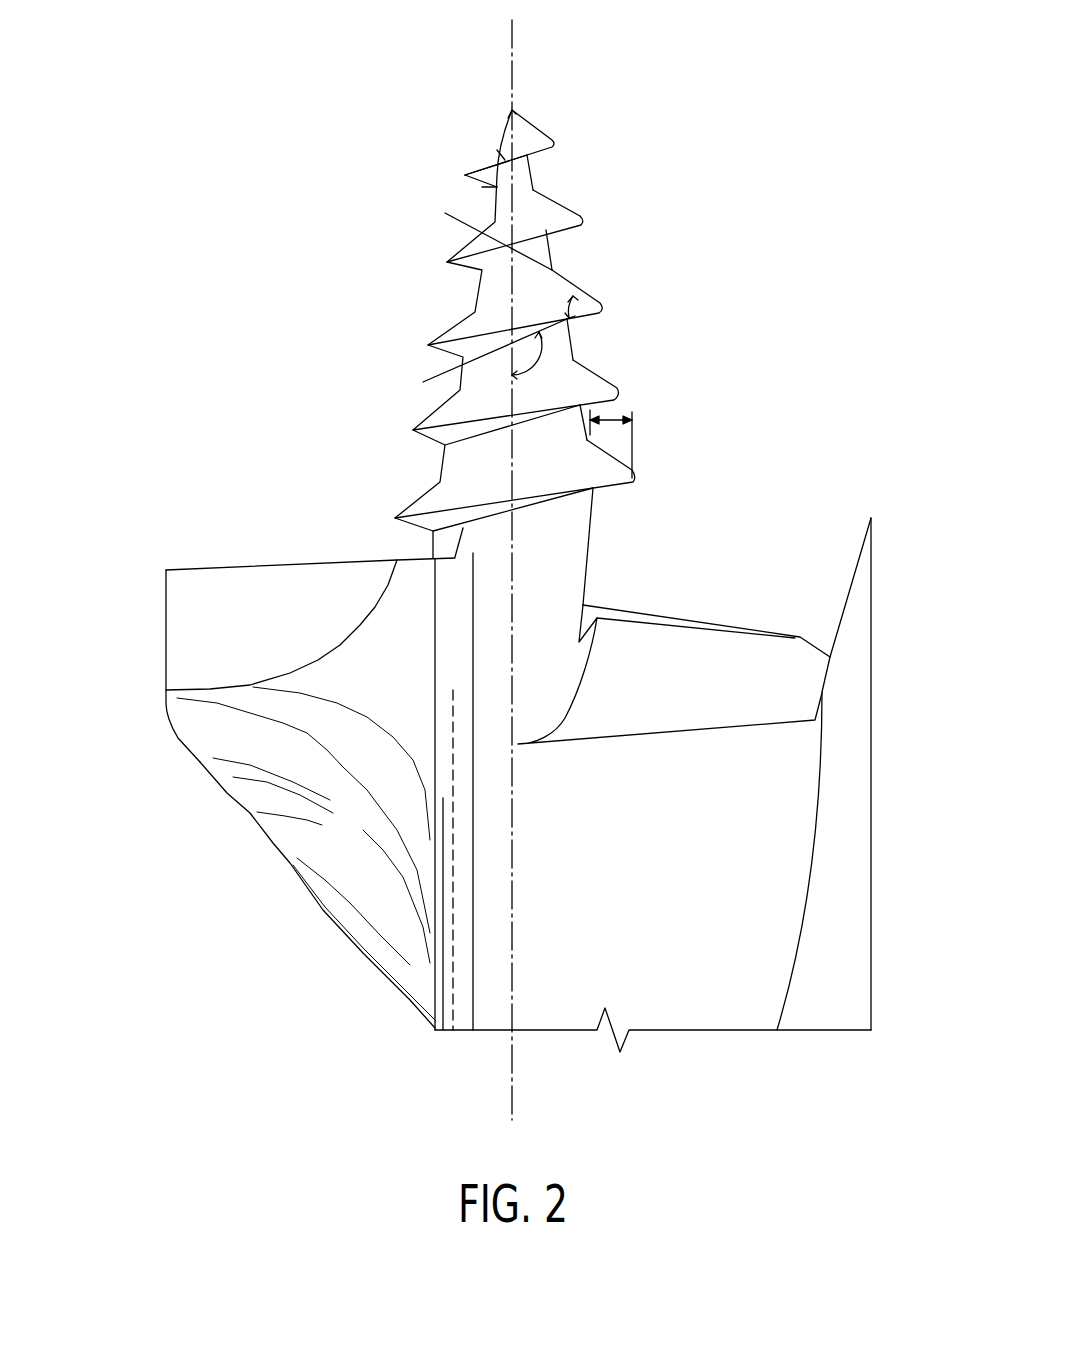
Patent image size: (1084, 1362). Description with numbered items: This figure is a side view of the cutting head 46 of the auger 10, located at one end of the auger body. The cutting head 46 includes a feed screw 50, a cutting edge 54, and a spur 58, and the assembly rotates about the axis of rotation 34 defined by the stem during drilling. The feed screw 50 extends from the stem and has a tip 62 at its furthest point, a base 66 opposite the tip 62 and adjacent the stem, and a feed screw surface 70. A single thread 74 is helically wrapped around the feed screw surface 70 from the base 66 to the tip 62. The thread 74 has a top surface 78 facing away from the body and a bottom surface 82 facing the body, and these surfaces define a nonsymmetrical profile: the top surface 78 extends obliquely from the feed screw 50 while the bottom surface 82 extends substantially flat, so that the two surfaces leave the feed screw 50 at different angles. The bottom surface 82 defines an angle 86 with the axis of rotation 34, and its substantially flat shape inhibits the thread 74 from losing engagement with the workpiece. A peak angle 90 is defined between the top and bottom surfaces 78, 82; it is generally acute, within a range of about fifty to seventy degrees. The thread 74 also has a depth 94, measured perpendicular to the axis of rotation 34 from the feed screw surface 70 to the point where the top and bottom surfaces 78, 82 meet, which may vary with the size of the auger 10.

The auger 10 is at (797, 32).
The axis of rotation 34 is at (508, 1073).
The cutting head 46 is at (125, 262).
The feed screw 50 is at (368, 208).
The cutting edge 54 is at (217, 565).
The spur 58 is at (872, 600).
The tip 62 is at (512, 110).
The base 66 is at (583, 503).
The feed screw surface 70 is at (463, 386).
The thread 74 is at (552, 204).
The top surface 78 is at (503, 152).
The bottom surface 82 is at (482, 187).
The angle 86 is at (544, 333).
The peak angle 90 is at (572, 290).
The depth 94 is at (625, 418).